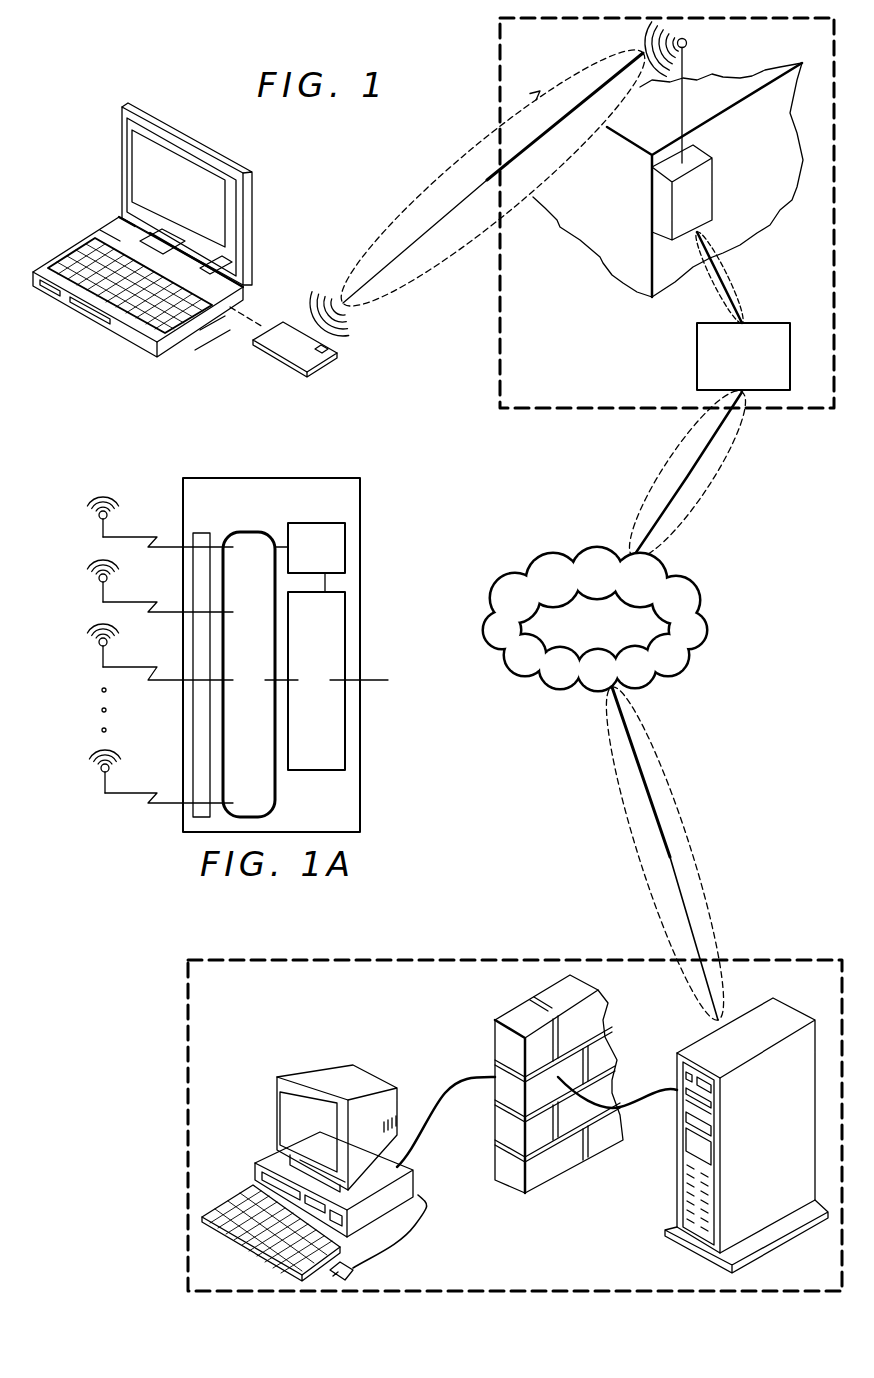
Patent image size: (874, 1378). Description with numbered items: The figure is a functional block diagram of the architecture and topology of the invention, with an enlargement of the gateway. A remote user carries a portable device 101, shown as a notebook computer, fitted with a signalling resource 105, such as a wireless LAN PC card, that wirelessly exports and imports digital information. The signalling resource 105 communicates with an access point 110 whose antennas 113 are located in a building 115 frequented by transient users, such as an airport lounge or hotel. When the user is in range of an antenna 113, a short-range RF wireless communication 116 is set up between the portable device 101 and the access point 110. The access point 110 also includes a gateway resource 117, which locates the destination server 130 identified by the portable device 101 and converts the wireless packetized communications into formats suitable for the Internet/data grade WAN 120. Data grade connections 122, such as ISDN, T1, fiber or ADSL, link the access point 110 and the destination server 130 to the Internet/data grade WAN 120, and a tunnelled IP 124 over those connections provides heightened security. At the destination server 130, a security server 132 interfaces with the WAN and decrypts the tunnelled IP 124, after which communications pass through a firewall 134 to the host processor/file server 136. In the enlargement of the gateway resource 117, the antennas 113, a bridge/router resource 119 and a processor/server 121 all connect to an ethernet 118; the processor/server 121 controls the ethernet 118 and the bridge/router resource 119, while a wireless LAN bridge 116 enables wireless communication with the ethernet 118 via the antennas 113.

In FIG. 1, the portable device 101 is at (73, 250).
In FIG. 1, the signalling resource 105 is at (321, 367).
In FIG. 1, the access point 110 is at (567, 392).
In FIG. 1, the antenna 113 is at (688, 46).
In FIG. 1A, the antenna 113 is at (98, 513).
In FIG. 1, the building 115 is at (625, 283).
In FIG. 1, the wireless communication 116 is at (339, 303).
In FIG. 1A, the wireless communication 116 is at (205, 531).
In FIG. 1, the gateway resource 117 is at (695, 363).
In FIG. 1A, the gateway resource 117 is at (200, 476).
In FIG. 1A, the ethernet 118 is at (253, 531).
In FIG. 1A, the bridge/router resource 119 is at (322, 772).
In FIG. 1, the Internet/data grade WAN 120 is at (700, 620).
In FIG. 1A, the processor/server 121 is at (315, 523).
In FIG. 1, the data grade connection 122 is at (737, 300).
In FIG. 1A, the data grade connection 122 is at (163, 549).
In FIG. 1, the tunnelled IP 124 is at (483, 138).
In FIG. 1, the destination server 130 is at (260, 1007).
In FIG. 1, the security server 132 is at (683, 1197).
In FIG. 1, the firewall 134 is at (495, 1045).
In FIG. 1, the host processor/file server 136 is at (275, 1100).